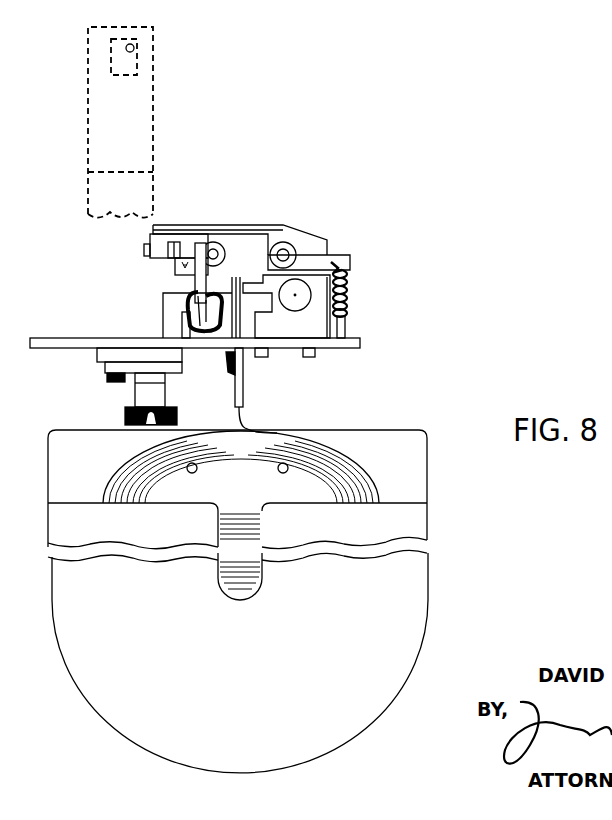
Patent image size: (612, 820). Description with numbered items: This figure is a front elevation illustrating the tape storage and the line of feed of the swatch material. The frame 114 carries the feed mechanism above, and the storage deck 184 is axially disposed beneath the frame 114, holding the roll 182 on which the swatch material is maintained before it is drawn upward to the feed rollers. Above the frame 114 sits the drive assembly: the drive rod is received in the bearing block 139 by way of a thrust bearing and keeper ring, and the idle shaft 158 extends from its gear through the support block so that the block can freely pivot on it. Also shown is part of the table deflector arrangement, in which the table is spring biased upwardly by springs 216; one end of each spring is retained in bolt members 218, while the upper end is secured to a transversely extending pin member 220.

The frame 114 is at (70, 348).
The bearing block 139 is at (303, 325).
The idle shaft 158 is at (290, 246).
The roll 182 is at (308, 458).
The storage deck 184 is at (414, 603).
The springs 216 is at (349, 300).
The bolt members 218 is at (347, 323).
The pin member 220 is at (338, 266).